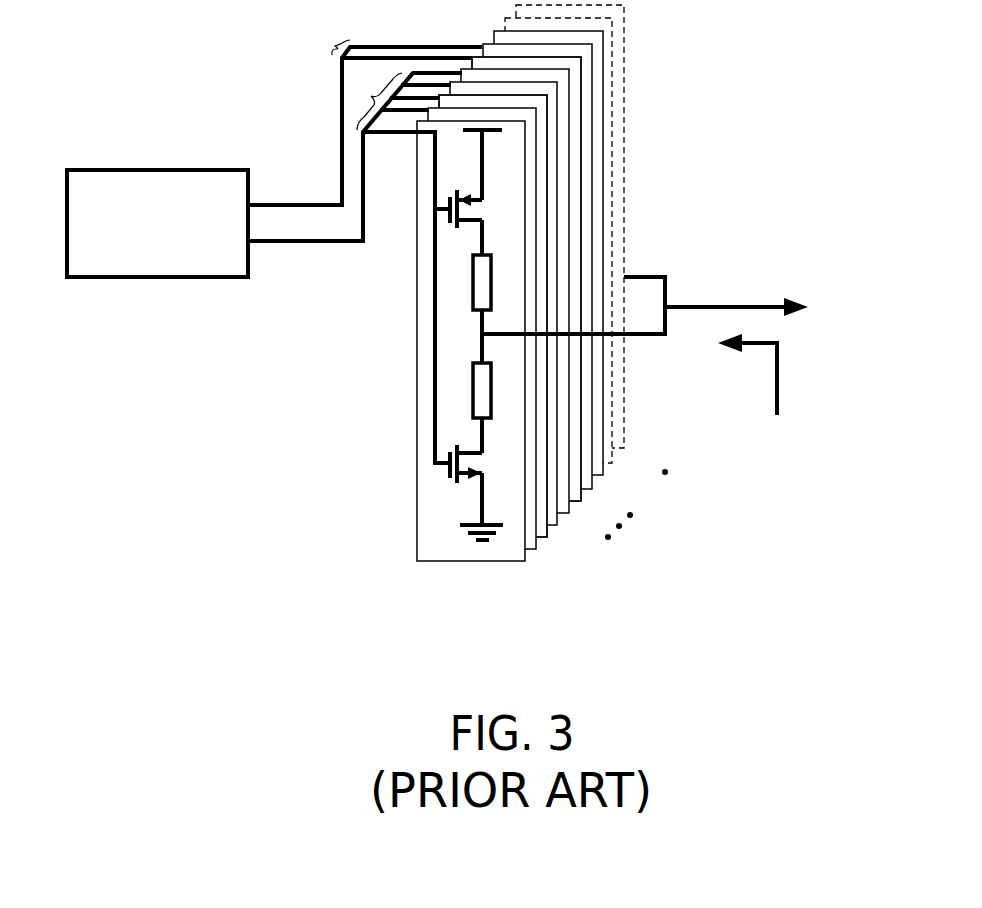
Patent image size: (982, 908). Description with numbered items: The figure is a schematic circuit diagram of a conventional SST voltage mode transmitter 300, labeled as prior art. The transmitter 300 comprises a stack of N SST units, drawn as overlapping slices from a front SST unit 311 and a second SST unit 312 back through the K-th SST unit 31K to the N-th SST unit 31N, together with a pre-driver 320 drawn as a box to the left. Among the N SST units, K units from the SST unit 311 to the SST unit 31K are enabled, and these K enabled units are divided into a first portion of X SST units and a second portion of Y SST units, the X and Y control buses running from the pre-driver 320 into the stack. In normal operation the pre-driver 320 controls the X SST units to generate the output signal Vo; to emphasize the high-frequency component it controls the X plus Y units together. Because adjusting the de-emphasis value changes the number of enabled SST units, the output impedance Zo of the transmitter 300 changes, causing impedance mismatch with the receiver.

The transmitter 300 is at (437, 306).
The SST unit 311 is at (507, 557).
The SST unit 312 is at (528, 538).
The SST unit 31K is at (596, 473).
The SST unit 31N is at (620, 433).
The pre-driver 320 is at (230, 273).